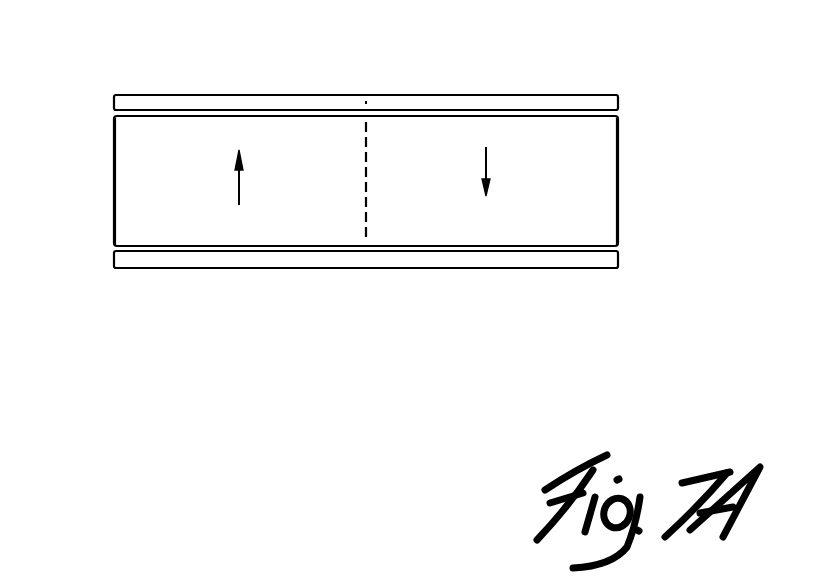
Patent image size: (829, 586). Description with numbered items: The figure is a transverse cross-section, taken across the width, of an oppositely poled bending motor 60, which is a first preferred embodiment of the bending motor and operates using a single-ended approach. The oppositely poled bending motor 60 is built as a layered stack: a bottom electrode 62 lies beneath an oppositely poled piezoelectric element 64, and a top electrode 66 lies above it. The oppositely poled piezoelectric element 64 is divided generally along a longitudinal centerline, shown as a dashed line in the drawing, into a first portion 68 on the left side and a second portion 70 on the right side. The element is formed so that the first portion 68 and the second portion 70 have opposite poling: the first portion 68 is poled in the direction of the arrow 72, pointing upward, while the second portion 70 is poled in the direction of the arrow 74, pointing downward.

The oppositely poled bending motor 60 is at (262, 53).
The bottom electrode 62 is at (593, 262).
The oppositely poled piezoelectric element 64 is at (618, 205).
The top electrode 66 is at (437, 95).
The first portion 68 is at (138, 197).
The second portion 70 is at (602, 147).
The arrow 72 is at (237, 188).
The arrow 74 is at (488, 163).